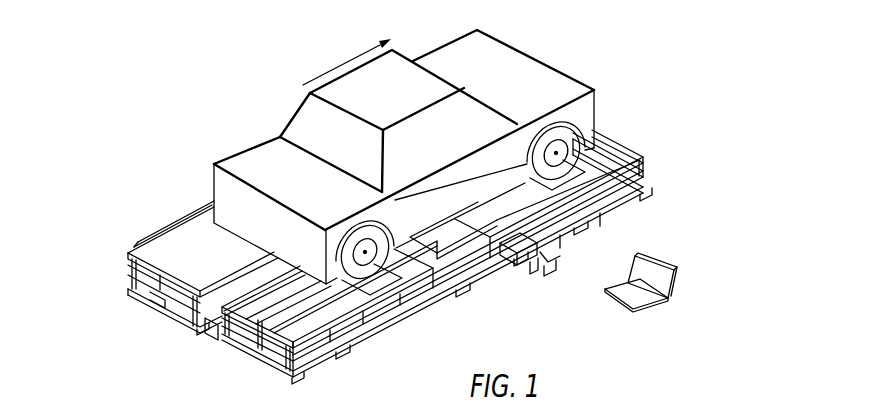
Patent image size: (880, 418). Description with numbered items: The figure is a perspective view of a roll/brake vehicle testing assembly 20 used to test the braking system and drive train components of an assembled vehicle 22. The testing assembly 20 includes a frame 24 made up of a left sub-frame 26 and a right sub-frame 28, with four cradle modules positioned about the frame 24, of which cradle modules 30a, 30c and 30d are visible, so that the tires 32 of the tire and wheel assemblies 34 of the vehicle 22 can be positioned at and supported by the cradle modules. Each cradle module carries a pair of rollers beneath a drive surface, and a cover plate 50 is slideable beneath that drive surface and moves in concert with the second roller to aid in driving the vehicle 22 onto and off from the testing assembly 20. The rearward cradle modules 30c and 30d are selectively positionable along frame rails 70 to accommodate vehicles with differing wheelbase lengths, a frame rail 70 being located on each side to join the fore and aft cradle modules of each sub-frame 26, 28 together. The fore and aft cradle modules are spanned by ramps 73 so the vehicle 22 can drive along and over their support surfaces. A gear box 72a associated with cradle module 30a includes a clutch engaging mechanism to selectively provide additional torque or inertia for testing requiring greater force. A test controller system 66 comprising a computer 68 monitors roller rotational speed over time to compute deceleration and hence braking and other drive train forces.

The roll/brake vehicle testing assembly 20 is at (80, 257).
The vehicle 22 is at (493, 62).
The frame 24 is at (168, 326).
The left sub-frame 26 is at (128, 290).
The right sub-frame 28 is at (622, 209).
The cradle module 30a is at (616, 134).
The cradle module 30c is at (194, 213).
The cradle module 30d is at (480, 280).
The tire 32 is at (606, 122).
The tire and wheel assembly 34 is at (550, 153).
The cover plate 50 is at (612, 161).
The test controller system 66 is at (664, 306).
The computer 68 is at (655, 278).
The frame rail 70 is at (343, 340).
The gear box 72a is at (548, 264).
The ramp 73 is at (472, 220).